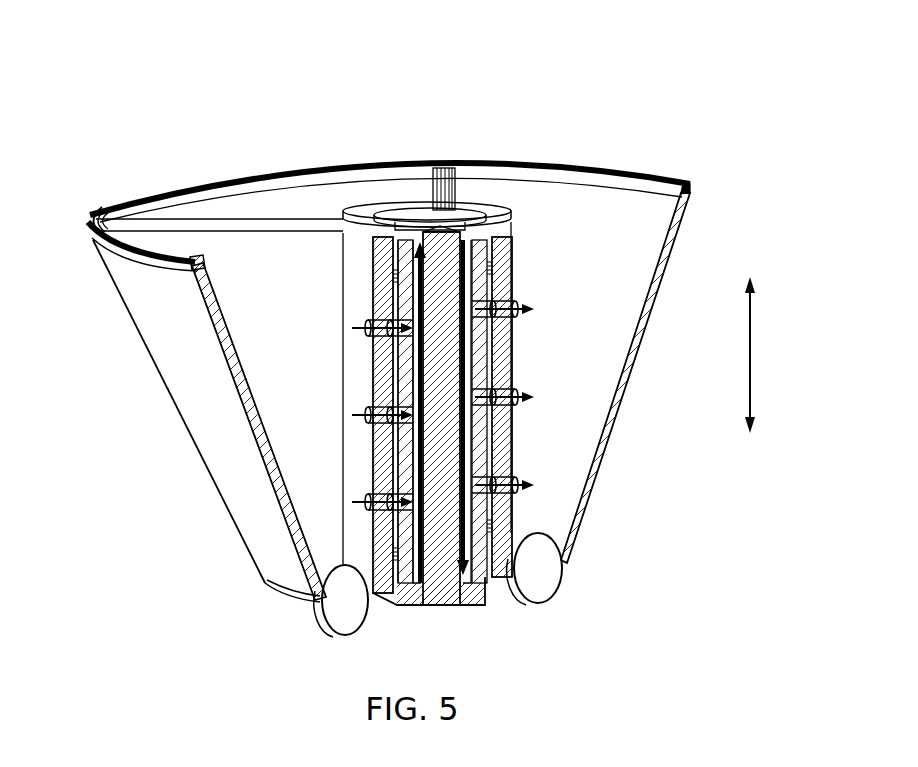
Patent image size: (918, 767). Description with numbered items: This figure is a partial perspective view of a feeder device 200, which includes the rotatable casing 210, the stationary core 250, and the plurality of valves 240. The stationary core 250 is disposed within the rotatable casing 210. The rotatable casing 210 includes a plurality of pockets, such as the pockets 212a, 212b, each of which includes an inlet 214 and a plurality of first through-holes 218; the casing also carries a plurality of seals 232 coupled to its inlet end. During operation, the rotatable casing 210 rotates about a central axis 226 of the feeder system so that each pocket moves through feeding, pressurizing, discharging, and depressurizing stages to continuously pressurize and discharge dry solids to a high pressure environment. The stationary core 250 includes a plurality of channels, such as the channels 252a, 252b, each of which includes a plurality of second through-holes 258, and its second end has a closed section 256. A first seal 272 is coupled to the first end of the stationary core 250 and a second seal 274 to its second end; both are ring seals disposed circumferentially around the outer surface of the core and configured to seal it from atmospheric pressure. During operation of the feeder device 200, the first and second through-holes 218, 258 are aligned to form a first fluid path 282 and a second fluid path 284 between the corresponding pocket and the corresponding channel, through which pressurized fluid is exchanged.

The feeder device 200 is at (138, 60).
The rotatable casing 210 is at (168, 355).
The pocket 212a is at (372, 192).
The pocket 212b is at (250, 247).
The inlet 214 is at (640, 196).
The first through-holes 218 is at (525, 310).
The central axis 226 is at (756, 360).
The seals 232 is at (135, 212).
The valves 240 is at (550, 575).
The stationary core 250 is at (478, 203).
The channel 252a is at (464, 205).
The channel 252b is at (410, 208).
The closed section 256 is at (445, 598).
The second through-holes 258 is at (497, 468).
The first seal 272 is at (495, 265).
The second seal 274 is at (517, 525).
The first fluid path 282 is at (468, 357).
The second fluid path 284 is at (424, 354).